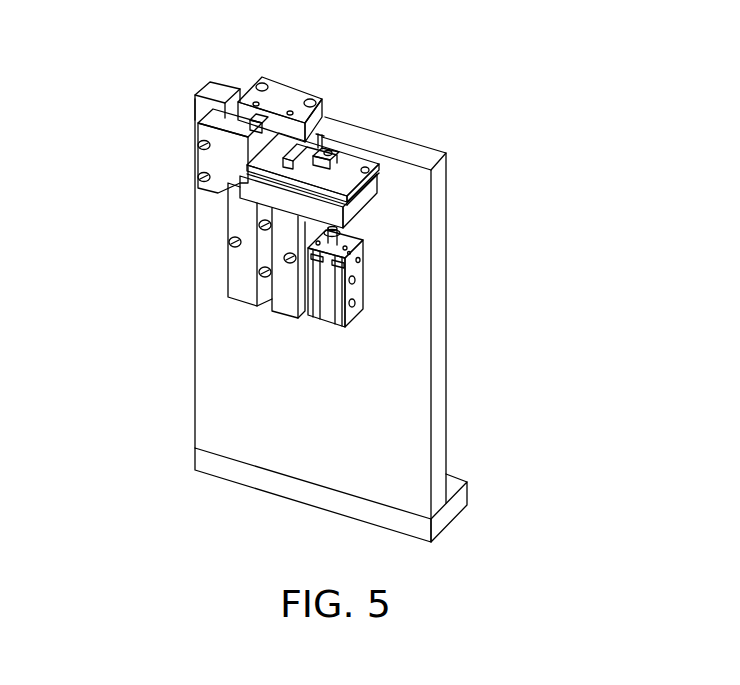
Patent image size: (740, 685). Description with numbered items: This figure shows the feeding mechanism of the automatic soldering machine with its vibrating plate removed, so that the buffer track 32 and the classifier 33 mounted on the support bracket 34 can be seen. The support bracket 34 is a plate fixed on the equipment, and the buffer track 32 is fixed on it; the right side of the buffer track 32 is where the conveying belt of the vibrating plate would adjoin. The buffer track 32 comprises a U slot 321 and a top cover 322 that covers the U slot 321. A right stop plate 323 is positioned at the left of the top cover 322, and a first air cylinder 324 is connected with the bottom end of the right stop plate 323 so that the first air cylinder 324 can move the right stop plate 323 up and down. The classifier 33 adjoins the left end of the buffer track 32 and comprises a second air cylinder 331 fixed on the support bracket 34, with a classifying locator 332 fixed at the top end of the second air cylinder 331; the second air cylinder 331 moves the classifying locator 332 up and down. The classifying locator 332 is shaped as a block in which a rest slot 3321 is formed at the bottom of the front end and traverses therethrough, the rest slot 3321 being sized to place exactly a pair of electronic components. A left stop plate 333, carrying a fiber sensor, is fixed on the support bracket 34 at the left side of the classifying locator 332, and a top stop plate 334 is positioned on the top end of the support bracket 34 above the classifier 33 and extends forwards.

The support bracket 34 is at (388, 436).
The classifier 33 is at (240, 197).
The second air cylinder 331 is at (243, 267).
The classifying locator 332 is at (218, 140).
The rest slot 3321 is at (236, 182).
The left stop plate 333 is at (214, 132).
The top stop plate 334 is at (295, 87).
The buffer track 32 is at (340, 226).
The U slot 321 is at (384, 183).
The top cover 322 is at (350, 163).
The right stop plate 323 is at (321, 133).
The first air cylinder 324 is at (343, 305).